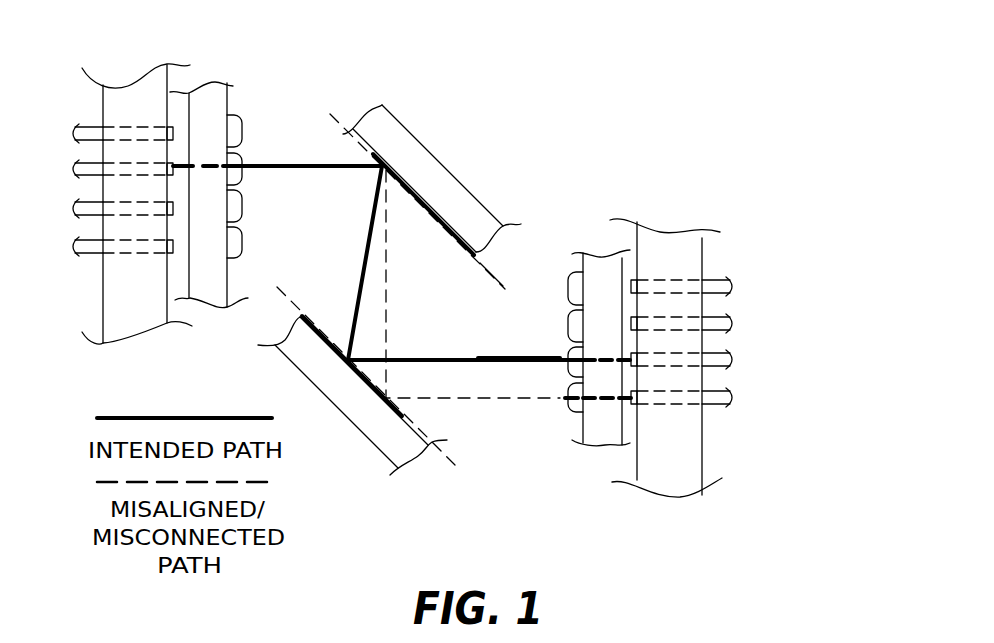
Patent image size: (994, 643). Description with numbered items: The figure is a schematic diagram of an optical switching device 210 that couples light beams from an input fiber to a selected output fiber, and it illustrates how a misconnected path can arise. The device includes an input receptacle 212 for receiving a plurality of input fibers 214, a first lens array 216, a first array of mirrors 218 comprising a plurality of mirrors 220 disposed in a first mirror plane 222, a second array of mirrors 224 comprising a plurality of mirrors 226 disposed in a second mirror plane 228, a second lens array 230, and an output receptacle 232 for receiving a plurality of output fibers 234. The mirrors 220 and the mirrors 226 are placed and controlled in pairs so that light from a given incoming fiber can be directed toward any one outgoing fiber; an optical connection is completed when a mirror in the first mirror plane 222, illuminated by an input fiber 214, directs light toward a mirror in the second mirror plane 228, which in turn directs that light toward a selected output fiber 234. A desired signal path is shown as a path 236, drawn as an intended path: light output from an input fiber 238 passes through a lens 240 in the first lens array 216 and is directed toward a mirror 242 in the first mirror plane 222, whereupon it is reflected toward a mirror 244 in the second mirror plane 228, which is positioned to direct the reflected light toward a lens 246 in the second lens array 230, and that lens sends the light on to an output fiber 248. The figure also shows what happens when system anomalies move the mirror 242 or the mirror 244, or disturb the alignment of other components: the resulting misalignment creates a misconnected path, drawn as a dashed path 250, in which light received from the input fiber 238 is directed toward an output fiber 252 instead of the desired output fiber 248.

The optical switching device 210 is at (584, 106).
The input receptacle 212 is at (135, 87).
The input fibers 214 is at (92, 126).
The first lens array 216 is at (215, 95).
The first array of mirrors 218 is at (398, 132).
The mirrors 220 is at (430, 200).
The first mirror plane 222 is at (489, 272).
The second array of mirrors 224 is at (321, 429).
The mirrors 226 is at (350, 400).
The second mirror plane 228 is at (448, 457).
The second lens array 230 is at (600, 260).
The output receptacle 232 is at (685, 263).
The output fibers 234 is at (712, 285).
The path 236 is at (478, 358).
The input fiber 238 is at (90, 170).
The lens 240 is at (255, 152).
The mirror 242 is at (380, 150).
The mirror 244 is at (342, 350).
The lens 246 is at (560, 375).
The output fiber 248 is at (720, 358).
The path 250 is at (463, 400).
The output fiber 252 is at (720, 398).